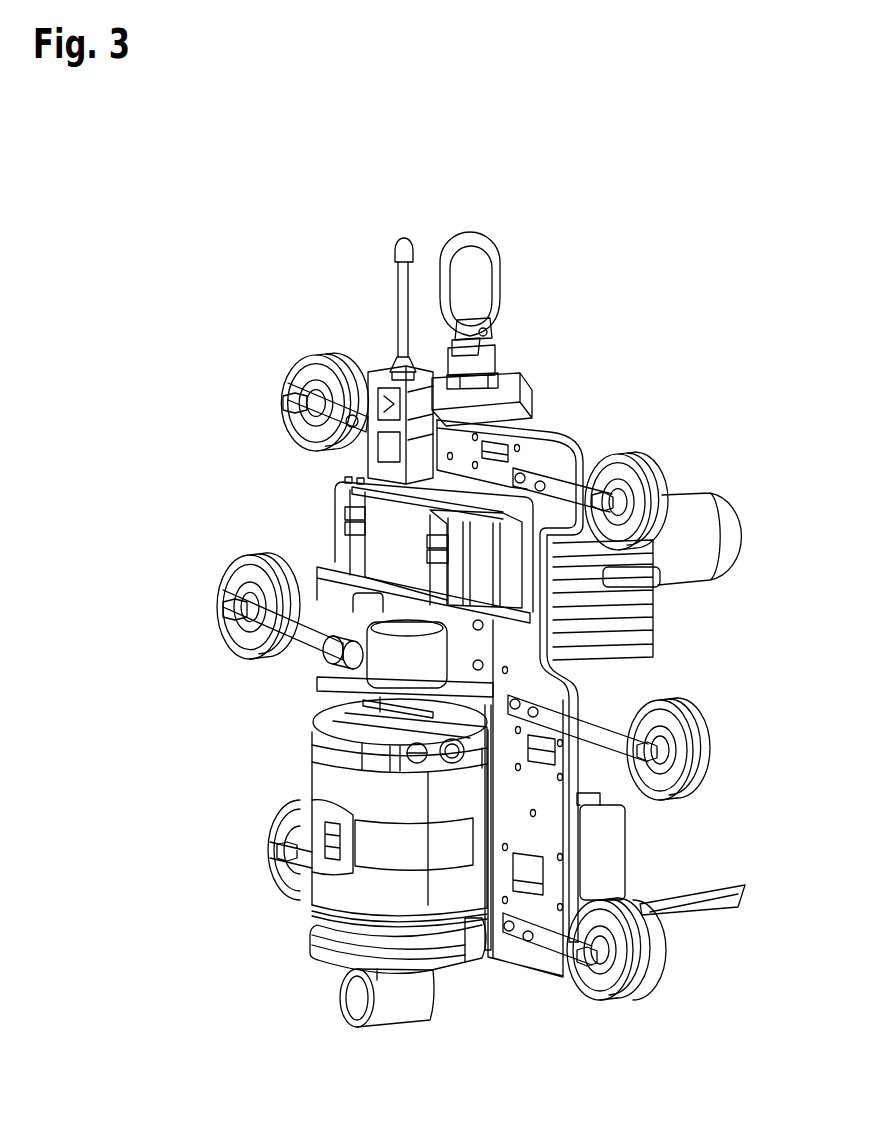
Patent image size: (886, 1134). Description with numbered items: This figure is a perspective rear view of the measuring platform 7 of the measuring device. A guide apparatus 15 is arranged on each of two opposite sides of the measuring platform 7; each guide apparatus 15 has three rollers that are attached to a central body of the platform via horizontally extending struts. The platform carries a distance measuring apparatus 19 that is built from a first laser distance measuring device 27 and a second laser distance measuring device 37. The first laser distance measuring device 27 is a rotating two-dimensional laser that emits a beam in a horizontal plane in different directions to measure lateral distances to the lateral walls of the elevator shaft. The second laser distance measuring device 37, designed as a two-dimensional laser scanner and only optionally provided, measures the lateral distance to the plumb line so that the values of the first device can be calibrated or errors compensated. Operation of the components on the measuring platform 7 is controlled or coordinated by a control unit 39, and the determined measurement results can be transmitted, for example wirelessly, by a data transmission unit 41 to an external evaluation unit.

The measuring platform 7 is at (233, 283).
The guide apparatus 15 is at (250, 436).
The distance measuring apparatus 19 is at (695, 1003).
The first laser distance measuring device 27 is at (418, 1032).
The second laser distance measuring device 37 is at (658, 922).
The control unit 39 is at (665, 628).
The data transmission unit 41 is at (355, 338).